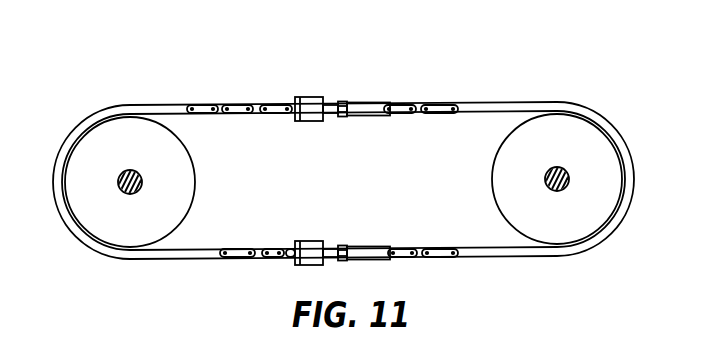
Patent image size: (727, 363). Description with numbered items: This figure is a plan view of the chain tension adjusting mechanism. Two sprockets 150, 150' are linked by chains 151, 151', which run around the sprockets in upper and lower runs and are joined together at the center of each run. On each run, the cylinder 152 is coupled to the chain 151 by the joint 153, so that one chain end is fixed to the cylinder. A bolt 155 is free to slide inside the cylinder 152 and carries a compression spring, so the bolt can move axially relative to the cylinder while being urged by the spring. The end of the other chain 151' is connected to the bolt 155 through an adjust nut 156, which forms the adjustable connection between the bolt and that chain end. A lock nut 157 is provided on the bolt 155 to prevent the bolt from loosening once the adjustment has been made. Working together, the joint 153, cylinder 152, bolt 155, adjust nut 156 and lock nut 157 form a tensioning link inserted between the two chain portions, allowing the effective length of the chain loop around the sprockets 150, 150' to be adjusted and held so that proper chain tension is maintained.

The sprocket 150 is at (124, 152).
The sprocket 150' is at (566, 154).
The chain 151 is at (343, 291).
The chain 151' is at (343, 75).
The cylinder 152 is at (313, 103).
The joint 153 is at (291, 98).
The bolt 155 is at (331, 105).
The adjust nut 156 is at (384, 102).
The lock nut 157 is at (341, 101).